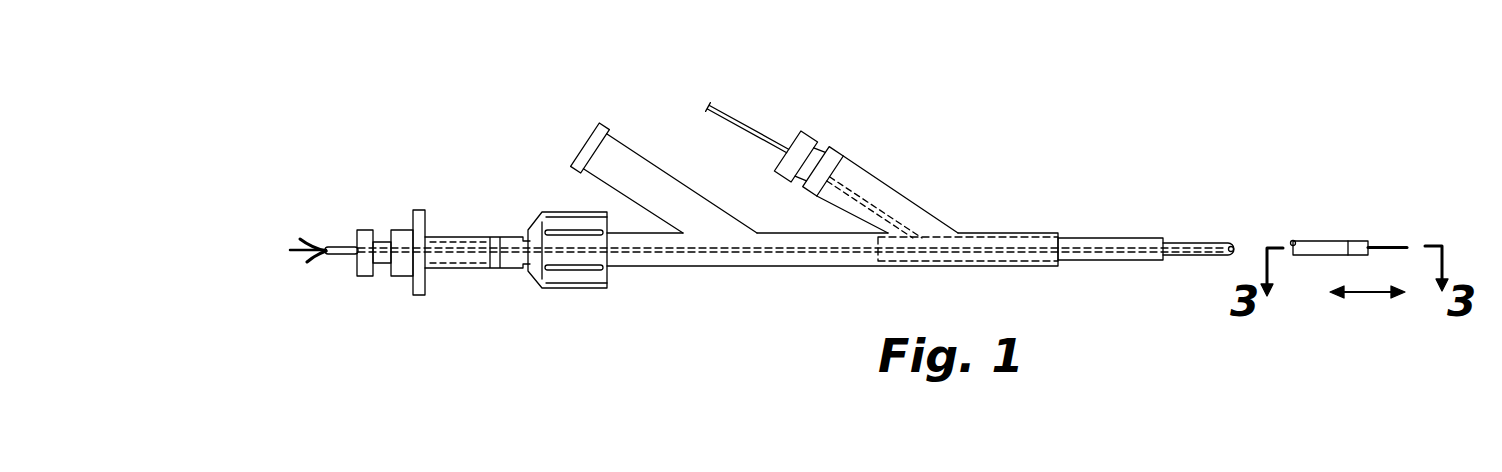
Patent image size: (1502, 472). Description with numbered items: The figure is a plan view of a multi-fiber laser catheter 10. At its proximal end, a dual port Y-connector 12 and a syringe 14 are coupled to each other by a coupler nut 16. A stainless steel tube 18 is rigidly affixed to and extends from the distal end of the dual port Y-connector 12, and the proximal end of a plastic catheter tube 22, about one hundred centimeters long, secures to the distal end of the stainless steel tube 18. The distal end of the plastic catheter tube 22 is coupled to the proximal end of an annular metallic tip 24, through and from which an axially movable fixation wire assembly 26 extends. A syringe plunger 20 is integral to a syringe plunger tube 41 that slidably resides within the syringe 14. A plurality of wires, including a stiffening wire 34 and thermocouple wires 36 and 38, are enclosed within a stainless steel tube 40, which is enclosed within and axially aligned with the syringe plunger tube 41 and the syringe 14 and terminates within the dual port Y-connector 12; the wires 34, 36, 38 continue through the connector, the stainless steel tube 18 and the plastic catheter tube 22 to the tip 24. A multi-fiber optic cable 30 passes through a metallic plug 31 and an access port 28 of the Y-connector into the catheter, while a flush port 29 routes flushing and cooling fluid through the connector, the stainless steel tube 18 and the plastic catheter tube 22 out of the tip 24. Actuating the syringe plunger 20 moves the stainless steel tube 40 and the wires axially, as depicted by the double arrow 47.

The multi-fiber laser catheter 10 is at (982, 117).
The dual port Y-connector 12 is at (958, 197).
The syringe 14 is at (455, 228).
The coupler nut 16 is at (572, 288).
The stainless steel tube 18 is at (1085, 238).
The syringe plunger 20 is at (363, 230).
The plastic catheter tube 22 is at (1182, 242).
The annular metallic tip 24 is at (1303, 241).
The fixation wire assembly 26 is at (1386, 230).
The access port 28 is at (857, 182).
The flush port 29 is at (640, 168).
The multi-fiber optic cable 30 is at (733, 116).
The metallic plug 31 is at (808, 135).
The stiffening wire 34 is at (310, 259).
The thermocouple wire 36 is at (301, 241).
The thermocouple wire 38 is at (311, 259).
The stainless steel tube 40 is at (338, 247).
The syringe plunger tube 41 is at (382, 272).
The double arrow 47 is at (1363, 293).